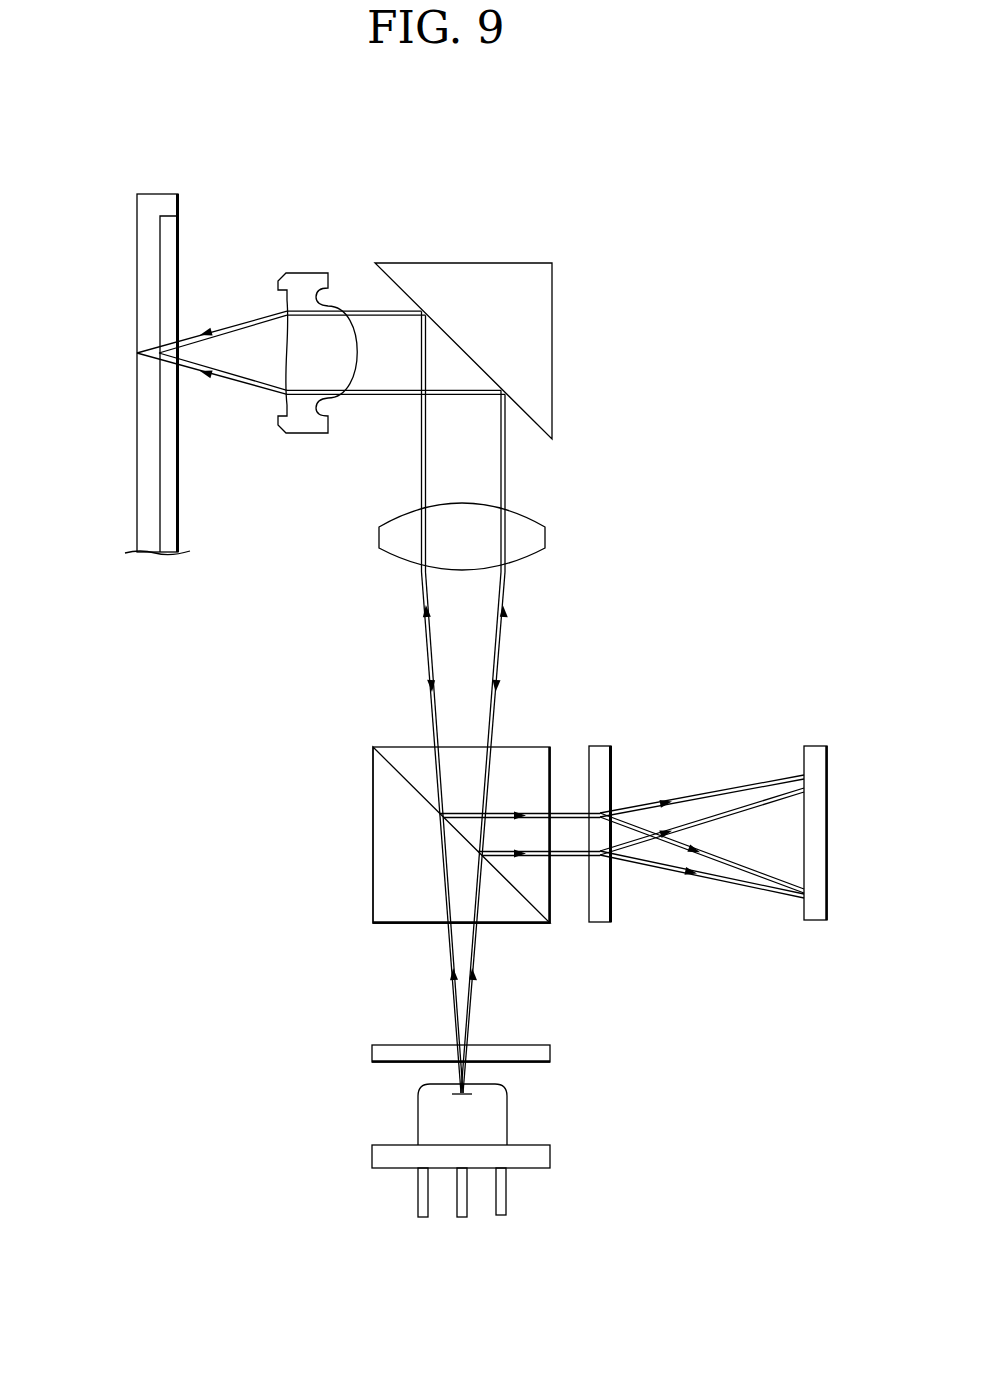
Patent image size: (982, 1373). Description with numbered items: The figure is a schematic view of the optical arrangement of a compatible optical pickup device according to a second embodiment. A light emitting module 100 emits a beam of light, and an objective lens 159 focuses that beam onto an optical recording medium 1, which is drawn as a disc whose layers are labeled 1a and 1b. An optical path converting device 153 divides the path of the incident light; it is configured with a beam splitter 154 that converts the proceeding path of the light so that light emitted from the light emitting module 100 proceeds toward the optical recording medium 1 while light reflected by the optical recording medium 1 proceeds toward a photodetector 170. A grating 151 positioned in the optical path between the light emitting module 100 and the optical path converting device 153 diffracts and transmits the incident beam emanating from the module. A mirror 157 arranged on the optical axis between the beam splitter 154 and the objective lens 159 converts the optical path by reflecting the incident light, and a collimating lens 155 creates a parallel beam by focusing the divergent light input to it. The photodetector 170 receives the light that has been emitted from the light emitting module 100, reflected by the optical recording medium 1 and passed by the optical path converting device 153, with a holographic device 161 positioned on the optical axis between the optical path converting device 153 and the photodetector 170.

The optical recording medium 1 is at (143, 331).
The information recording surface 1a is at (172, 233).
The disc substrate 1b is at (156, 196).
The light emitting module 100 is at (545, 1115).
The grating 151 is at (553, 1055).
The optical path converting device 153 is at (408, 867).
The beam splitter 154 is at (396, 908).
The collimating lens 155 is at (556, 537).
The mirror 157 is at (515, 266).
The objective lens 159 is at (311, 273).
The holographic device 161 is at (605, 745).
The photodetector 170 is at (819, 713).